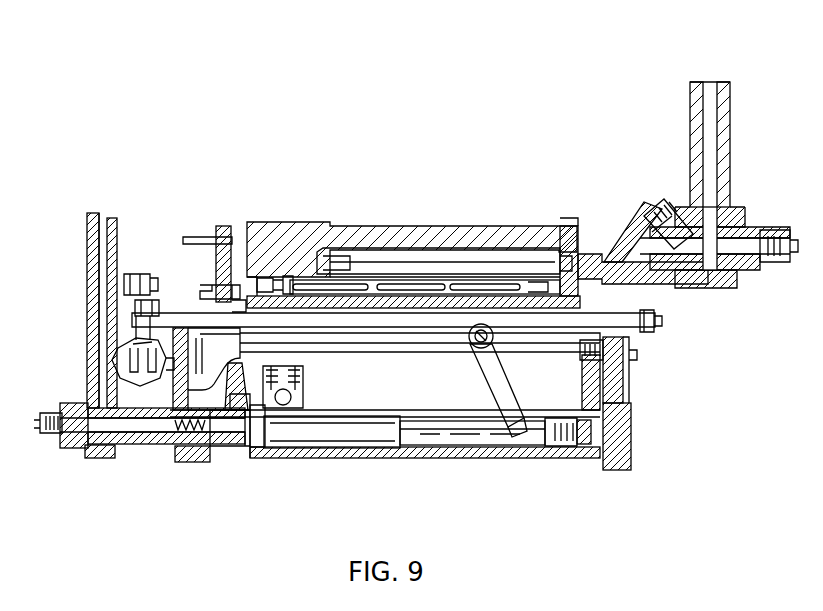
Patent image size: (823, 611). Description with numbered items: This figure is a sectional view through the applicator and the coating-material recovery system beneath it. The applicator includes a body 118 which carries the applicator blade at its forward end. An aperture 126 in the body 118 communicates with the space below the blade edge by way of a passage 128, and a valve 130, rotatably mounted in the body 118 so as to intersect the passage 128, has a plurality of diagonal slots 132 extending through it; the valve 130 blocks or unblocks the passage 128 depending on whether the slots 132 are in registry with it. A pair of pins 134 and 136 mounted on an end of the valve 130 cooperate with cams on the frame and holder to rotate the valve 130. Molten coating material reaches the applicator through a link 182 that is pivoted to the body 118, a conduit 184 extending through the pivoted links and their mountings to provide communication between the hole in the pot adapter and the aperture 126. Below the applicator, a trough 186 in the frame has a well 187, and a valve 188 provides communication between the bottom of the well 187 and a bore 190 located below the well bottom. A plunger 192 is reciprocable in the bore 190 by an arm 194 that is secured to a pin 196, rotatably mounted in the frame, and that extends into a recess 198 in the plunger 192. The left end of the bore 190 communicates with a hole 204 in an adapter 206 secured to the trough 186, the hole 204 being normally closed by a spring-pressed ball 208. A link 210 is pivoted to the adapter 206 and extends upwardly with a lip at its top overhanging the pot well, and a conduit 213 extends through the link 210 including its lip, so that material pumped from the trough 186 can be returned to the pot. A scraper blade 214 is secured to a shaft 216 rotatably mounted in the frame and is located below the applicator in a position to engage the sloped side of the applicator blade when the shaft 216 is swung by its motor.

The body 118 is at (307, 236).
The aperture 126 is at (420, 260).
The passage 128 is at (366, 268).
The valve 130 is at (287, 276).
The diagonal slots 132 is at (472, 282).
The pin 134 is at (198, 238).
The pin 136 is at (206, 290).
The link 182 is at (730, 149).
The conduit 184 is at (604, 258).
The trough 186 is at (590, 392).
The well 187 is at (400, 395).
The valve 188 is at (301, 386).
The bore 190 is at (352, 446).
The plunger 192 is at (474, 422).
The arm 194 is at (505, 392).
The pin 196 is at (472, 348).
The recess 198 is at (522, 444).
The hole 204 is at (146, 434).
The adapter 206 is at (218, 440).
The spring-pressed ball 208 is at (204, 440).
The link 210 is at (88, 310).
The conduit 213 is at (98, 252).
The scraper blade 214 is at (576, 320).
The shaft 216 is at (656, 330).